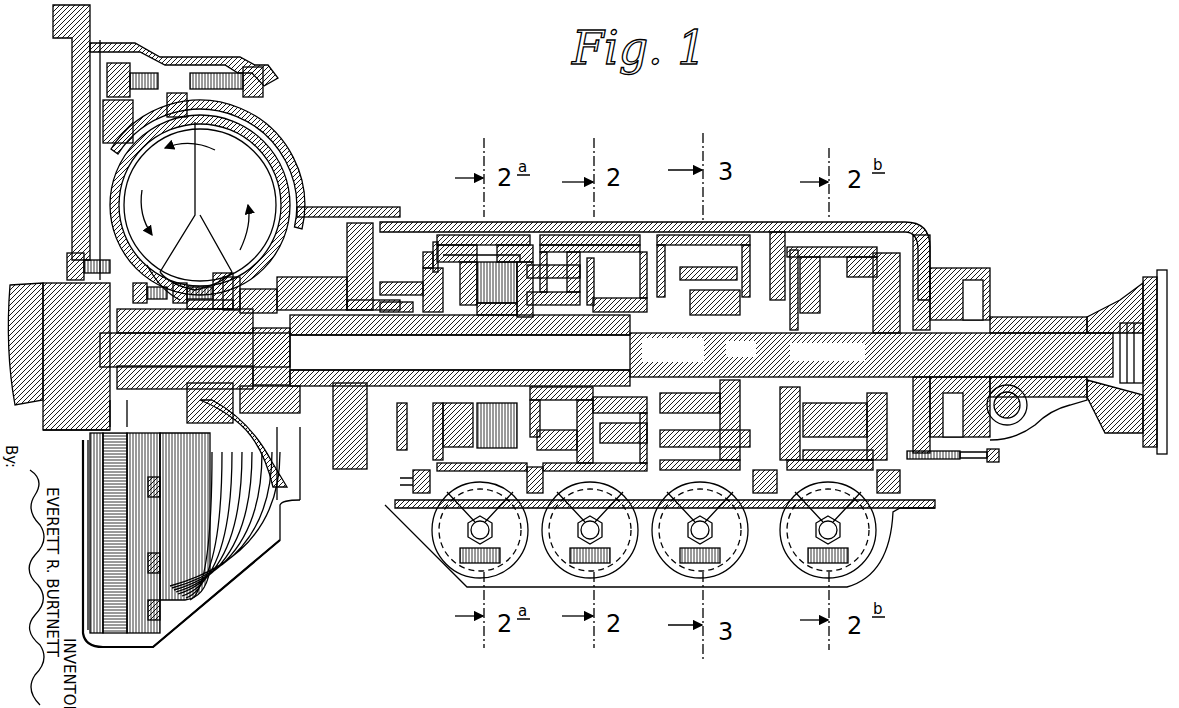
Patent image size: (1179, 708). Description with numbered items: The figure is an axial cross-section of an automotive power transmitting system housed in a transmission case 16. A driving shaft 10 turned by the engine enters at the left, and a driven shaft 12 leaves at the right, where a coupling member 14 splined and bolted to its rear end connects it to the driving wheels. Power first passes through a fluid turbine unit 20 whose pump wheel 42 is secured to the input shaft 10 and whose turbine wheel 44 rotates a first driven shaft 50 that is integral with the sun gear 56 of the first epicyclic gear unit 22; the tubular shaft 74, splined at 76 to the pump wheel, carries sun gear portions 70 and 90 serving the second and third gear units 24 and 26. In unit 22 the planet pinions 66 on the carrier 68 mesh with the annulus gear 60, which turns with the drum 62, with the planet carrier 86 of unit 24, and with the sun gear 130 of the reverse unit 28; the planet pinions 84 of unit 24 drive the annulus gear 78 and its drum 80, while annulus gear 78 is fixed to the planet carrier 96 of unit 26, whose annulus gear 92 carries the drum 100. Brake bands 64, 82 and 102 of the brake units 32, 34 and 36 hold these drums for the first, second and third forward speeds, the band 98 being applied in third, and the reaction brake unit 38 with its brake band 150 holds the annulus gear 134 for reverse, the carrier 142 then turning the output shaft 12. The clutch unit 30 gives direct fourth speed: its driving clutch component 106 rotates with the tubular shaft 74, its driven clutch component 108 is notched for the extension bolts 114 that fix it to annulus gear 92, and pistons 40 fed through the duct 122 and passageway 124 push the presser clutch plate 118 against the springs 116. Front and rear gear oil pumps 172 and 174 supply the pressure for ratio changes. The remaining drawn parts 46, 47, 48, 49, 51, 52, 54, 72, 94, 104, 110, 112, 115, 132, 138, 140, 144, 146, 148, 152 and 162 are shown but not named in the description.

The driving shaft 10 is at (25, 282).
The driven shaft 12 is at (1078, 345).
The coupling member 14 is at (1112, 312).
The transmission case 16 is at (890, 226).
The fluid turbine unit 20 is at (238, 170).
The first epicyclic gear unit 22 is at (718, 238).
The second epicyclic gear unit 24 is at (620, 235).
The third epicyclic gear unit 26 is at (563, 234).
The rear epicyclic gear unit 28 is at (897, 273).
The clutch unit 30 is at (430, 245).
The brake unit 32 is at (692, 238).
The brake unit 34 is at (598, 238).
The brake unit 36 is at (452, 235).
The reaction brake unit 38 is at (855, 240).
The pistons 40 is at (445, 430).
The pump wheel 42 is at (252, 195).
The turbine wheel 44 is at (182, 175).
The converter housing 46 is at (272, 157).
The bolt 47 is at (98, 300).
The engine flange 48 is at (85, 149).
The sleeve 49 is at (737, 348).
The first driven shaft 50 is at (460, 350).
The stator 51 is at (160, 268).
The crankshaft flange 52 is at (32, 400).
The output shaft section 54 is at (802, 349).
The sun gear 56 is at (676, 354).
The annulus gear 60 is at (716, 275).
The drum 62 is at (712, 243).
The brake band 64 is at (708, 236).
The planet pinions 66 is at (682, 312).
The carrier 68 is at (728, 420).
The sun gear portion 70 is at (612, 312).
The bolt 72 is at (200, 282).
The tubular shaft 74 is at (379, 345).
The splines 76 is at (271, 356).
The annulus gear 78 is at (652, 243).
The drum 80 is at (550, 234).
The brake band 82 is at (578, 234).
The planet pinions 84 is at (662, 342).
The planet carrier 86 is at (684, 351).
The sun gear 90 is at (525, 353).
The annulus gear 92 is at (561, 356).
The spring 94 is at (545, 306).
The planet carrier 96 is at (588, 332).
The band 98 is at (512, 236).
The drum 100 is at (524, 236).
The brake band 102 is at (462, 238).
The hub 104 is at (556, 326).
The driving clutch component 106 is at (490, 318).
The driven clutch component 108 is at (492, 262).
The piston 110 is at (446, 290).
The passage 112 is at (517, 341).
The extension bolts 114 is at (433, 250).
The ring 115 is at (423, 258).
The springs 116 is at (470, 472).
The presser clutch plate 118 is at (412, 286).
The duct 122 is at (407, 481).
The passageway 124 is at (412, 368).
The sun gear 130 is at (871, 355).
The planet gear 132 is at (898, 290).
The annulus gear 134 is at (891, 286).
The web 138 is at (795, 240).
The partition 140 is at (776, 232).
The carrier 142 is at (885, 427).
The gear 144 is at (848, 436).
The housing wall 146 is at (915, 262).
The brake drum 148 is at (810, 246).
The brake band 150 is at (830, 246).
The servo 152 is at (718, 556).
The servo cylinders 162 is at (450, 555).
The front gear oil pump 172 is at (334, 455).
The rear gear oil pump 174 is at (940, 462).